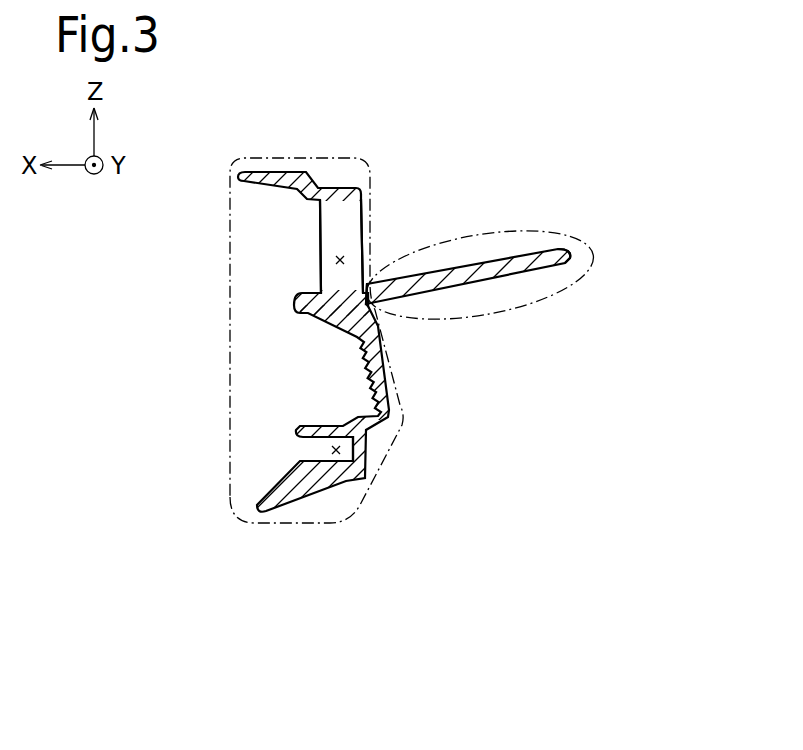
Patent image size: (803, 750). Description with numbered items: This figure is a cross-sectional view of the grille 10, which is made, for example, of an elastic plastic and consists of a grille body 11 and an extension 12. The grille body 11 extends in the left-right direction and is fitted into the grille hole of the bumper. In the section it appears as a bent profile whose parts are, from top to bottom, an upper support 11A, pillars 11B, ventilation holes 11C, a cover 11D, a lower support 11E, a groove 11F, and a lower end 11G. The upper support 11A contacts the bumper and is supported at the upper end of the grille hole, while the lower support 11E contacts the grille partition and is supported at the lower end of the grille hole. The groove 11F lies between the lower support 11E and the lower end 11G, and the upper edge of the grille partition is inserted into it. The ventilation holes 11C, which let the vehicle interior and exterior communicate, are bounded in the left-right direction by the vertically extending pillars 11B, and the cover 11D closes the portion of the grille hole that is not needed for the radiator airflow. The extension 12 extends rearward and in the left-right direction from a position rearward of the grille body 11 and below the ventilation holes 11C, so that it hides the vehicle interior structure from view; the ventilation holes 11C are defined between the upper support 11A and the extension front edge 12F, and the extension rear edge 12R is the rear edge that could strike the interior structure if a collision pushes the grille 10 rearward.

The grille 10 is at (411, 168).
The grille body 11 is at (331, 158).
The upper support 11A is at (258, 173).
The pillars 11B is at (330, 227).
The ventilation holes 11C is at (333, 262).
The cover 11D is at (358, 358).
The lower support 11E is at (313, 428).
The groove 11F is at (330, 450).
The lower end 11G is at (256, 501).
The extension 12 is at (503, 233).
The extension rear edge 12R is at (568, 253).
The extension front edge 12F is at (368, 303).